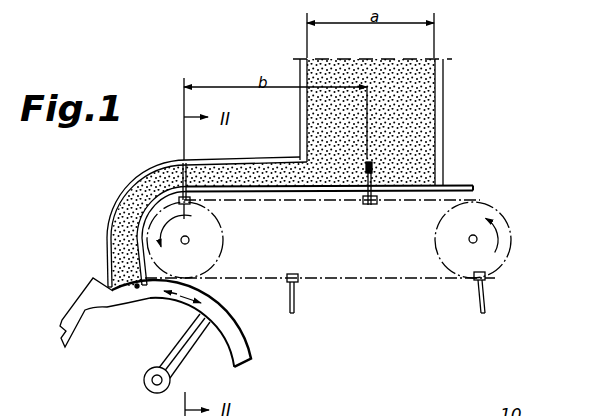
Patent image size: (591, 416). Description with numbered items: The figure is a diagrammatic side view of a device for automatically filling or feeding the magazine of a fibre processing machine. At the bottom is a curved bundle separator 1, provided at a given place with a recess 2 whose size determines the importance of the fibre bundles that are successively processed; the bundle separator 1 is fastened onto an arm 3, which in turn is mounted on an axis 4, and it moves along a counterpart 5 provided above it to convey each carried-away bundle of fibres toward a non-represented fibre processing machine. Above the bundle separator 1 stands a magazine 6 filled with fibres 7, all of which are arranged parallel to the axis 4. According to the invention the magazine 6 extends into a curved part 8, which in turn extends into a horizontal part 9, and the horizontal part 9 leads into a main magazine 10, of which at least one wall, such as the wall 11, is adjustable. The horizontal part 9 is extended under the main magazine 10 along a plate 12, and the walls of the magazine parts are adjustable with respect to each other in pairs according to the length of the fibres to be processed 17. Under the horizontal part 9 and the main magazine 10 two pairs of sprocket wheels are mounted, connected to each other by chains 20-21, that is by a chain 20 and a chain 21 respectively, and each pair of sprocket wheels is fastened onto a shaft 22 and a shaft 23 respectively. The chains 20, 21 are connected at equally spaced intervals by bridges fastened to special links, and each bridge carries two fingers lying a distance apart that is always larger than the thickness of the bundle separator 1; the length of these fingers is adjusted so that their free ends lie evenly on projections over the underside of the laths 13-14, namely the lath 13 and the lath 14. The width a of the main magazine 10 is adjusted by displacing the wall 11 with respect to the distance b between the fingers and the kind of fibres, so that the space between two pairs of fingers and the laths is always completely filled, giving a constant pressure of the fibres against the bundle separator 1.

The bundle separator 1 is at (242, 348).
The recess 2 is at (137, 289).
The arm 3 is at (192, 338).
The axis 4 is at (151, 390).
The scraper plate 5 is at (67, 318).
The magazine 6 is at (108, 262).
The fibres 7 is at (126, 213).
The curved part 8 is at (128, 184).
The horizontal part 9 is at (265, 159).
The main magazine 10 is at (301, 121).
The wall 11 is at (446, 133).
The base plate 12 is at (275, 197).
The laths 13-14 is at (220, 149).
The lath 13 is at (220, 149).
The lath 14 is at (193, 163).
The fibres to be processed 17 is at (428, 107).
The chains 20-21 is at (320, 293).
The chain 20 is at (320, 293).
The chain 21 is at (386, 278).
The shaft 22 is at (188, 237).
The shaft 23 is at (472, 243).